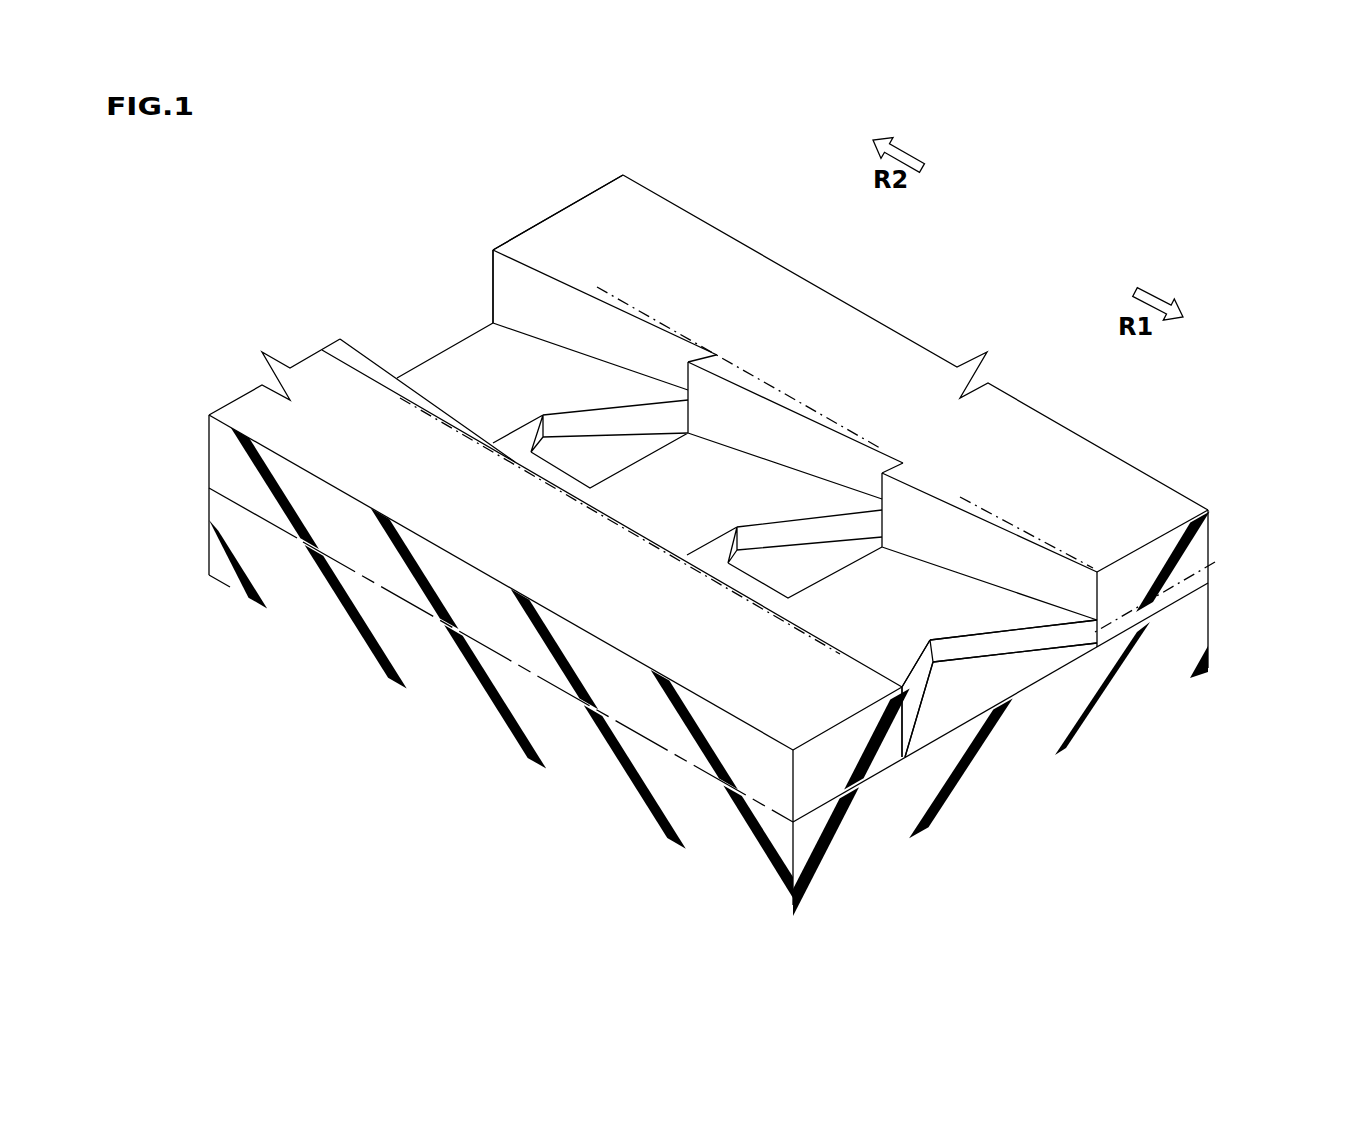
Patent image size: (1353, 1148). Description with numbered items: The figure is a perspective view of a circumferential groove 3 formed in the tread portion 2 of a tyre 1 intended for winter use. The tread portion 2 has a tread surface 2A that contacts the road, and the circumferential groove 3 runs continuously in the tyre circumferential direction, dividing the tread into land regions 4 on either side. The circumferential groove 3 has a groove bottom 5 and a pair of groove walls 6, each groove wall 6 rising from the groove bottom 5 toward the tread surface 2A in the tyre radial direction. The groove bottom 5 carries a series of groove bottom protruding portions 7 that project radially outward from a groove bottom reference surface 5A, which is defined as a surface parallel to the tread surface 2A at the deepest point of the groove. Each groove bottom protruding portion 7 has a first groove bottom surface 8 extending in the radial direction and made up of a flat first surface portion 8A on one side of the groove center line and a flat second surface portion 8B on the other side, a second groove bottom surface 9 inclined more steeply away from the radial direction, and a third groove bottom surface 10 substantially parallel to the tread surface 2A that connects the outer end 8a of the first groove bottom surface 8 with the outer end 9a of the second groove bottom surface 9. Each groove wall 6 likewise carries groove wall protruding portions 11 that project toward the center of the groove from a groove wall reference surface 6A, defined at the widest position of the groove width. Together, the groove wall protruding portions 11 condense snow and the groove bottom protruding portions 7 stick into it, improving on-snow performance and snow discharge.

The tyre 1 is at (1033, 192).
The tread portion 2 is at (860, 263).
The tread surface 2A is at (710, 280).
The circumferential groove 3 is at (423, 295).
The land region 4 is at (317, 430).
The groove bottom 5 is at (588, 392).
The groove bottom reference surface 5A is at (1165, 602).
The groove wall 6 is at (827, 497).
The groove wall reference surface 6A is at (762, 415).
The groove bottom protruding portion 7 is at (787, 428).
The first groove bottom surface 8 is at (1262, 778).
The first surface portion 8A is at (926, 697).
The second surface portion 8B is at (1053, 640).
The outer end of the first groove bottom surface 8a is at (1013, 627).
The second groove bottom surface 9 is at (886, 637).
The outer end of the second groove bottom surface 9a is at (998, 597).
The third groove bottom surface 10 is at (1040, 617).
The groove wall protruding portion 11 is at (513, 250).